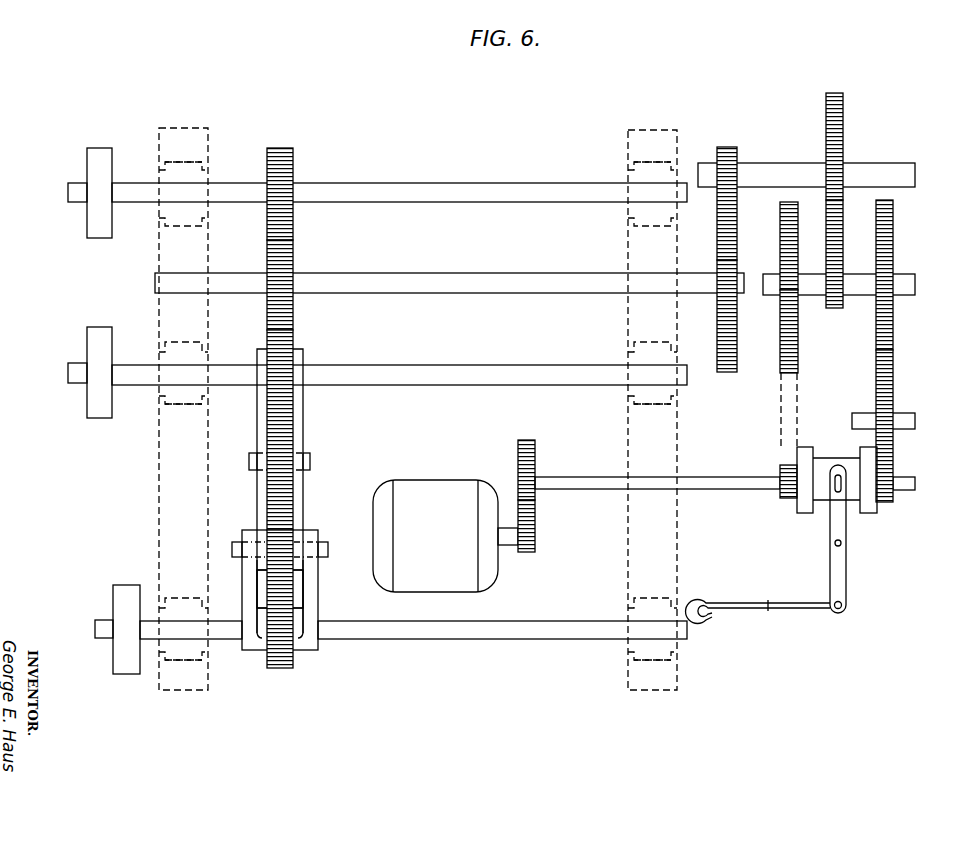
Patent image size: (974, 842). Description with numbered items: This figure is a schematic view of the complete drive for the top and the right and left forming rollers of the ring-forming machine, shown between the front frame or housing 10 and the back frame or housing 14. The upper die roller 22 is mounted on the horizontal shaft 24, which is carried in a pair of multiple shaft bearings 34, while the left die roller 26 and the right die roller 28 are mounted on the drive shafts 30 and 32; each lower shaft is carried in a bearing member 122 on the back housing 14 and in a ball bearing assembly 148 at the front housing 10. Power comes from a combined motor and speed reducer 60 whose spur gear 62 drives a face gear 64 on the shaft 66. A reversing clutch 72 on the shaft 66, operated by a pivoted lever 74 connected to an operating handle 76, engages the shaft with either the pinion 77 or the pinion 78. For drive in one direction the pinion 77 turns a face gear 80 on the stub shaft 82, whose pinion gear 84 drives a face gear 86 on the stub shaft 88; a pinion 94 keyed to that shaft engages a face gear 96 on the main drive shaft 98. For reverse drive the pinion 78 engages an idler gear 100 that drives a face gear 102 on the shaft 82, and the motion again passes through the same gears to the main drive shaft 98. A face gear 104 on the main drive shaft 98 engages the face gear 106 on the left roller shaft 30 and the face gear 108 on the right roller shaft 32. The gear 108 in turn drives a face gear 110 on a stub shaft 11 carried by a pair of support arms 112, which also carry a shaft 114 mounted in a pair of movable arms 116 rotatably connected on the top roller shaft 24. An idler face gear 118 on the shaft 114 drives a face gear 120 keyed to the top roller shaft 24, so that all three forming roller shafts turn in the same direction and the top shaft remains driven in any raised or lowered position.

The front frame or housing 10 is at (190, 124).
The back frame or housing 14 is at (660, 124).
The upper die roller 22 is at (115, 661).
The horizontal shaft 24 is at (355, 643).
The left die roller 26 is at (87, 229).
The right die roller 28 is at (87, 410).
The drive shaft 30 is at (470, 183).
The drive shaft 32 is at (322, 386).
The multiple shaft bearing 34 is at (187, 661).
The combined motor and speed reducer 60 is at (410, 488).
The spur gear 62 is at (535, 544).
The face gear 64 is at (518, 447).
The shaft 66 is at (570, 477).
The reversing clutch 72 is at (838, 464).
The pivoted lever 74 is at (846, 572).
The operating handle 76 is at (758, 612).
The pinion 77 is at (778, 493).
The pinion 78 is at (887, 502).
The face gear 80 is at (780, 348).
The stub shaft 82 is at (818, 297).
The pinion gear 84 is at (840, 308).
The face gear 86 is at (843, 131).
The stub shaft 88 is at (892, 173).
The pinion 94 is at (737, 152).
The face gear 96 is at (717, 346).
The main drive shaft 98 is at (523, 293).
The idler gear 100 is at (893, 400).
The face gear 102 is at (894, 253).
The face gear 104 is at (293, 253).
The face gear 106 is at (293, 158).
The face gear 108 is at (293, 342).
The face gear 110 is at (283, 442).
The support arms 112 is at (305, 500).
The shaft 114 is at (328, 549).
The movable arms 116 is at (320, 605).
The idler face gear 118 is at (277, 581).
The face gear 120 is at (281, 668).
The bearing member 122 is at (650, 226).
The ball bearing assembly 148 is at (178, 227).
The stub shaft 11 is at (310, 463).